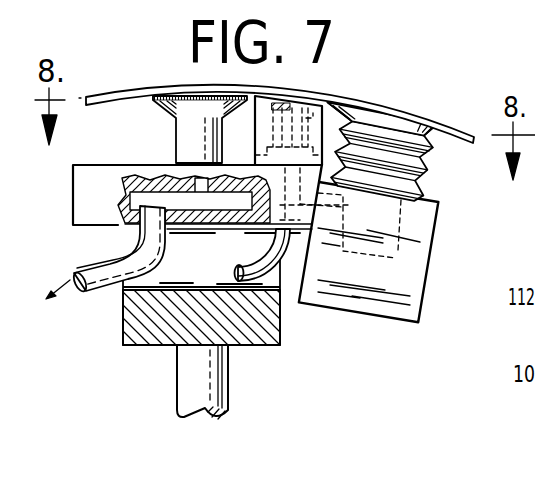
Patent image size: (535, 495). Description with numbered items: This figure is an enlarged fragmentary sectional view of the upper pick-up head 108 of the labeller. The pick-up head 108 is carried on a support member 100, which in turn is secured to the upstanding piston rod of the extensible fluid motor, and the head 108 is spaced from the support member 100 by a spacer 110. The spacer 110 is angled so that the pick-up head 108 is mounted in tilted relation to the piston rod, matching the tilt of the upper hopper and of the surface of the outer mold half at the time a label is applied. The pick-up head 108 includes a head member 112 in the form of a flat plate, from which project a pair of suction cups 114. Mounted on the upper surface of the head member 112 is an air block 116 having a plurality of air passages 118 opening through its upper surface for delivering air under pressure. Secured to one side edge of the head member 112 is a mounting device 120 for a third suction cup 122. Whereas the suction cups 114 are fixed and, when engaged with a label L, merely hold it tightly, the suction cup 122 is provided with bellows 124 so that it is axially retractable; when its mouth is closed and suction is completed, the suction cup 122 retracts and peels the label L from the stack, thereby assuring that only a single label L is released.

The label L is at (130, 95).
The support member 100 is at (275, 318).
The upper pick-up head 108 is at (117, 324).
The spacer 110 is at (214, 270).
The head member 112 is at (92, 214).
The suction cups 114 is at (177, 137).
The air block 116 is at (285, 98).
The air passages 118 is at (323, 86).
The mounting device 120 is at (433, 233).
The third suction cup 122 is at (397, 123).
The bellows 124 is at (427, 166).